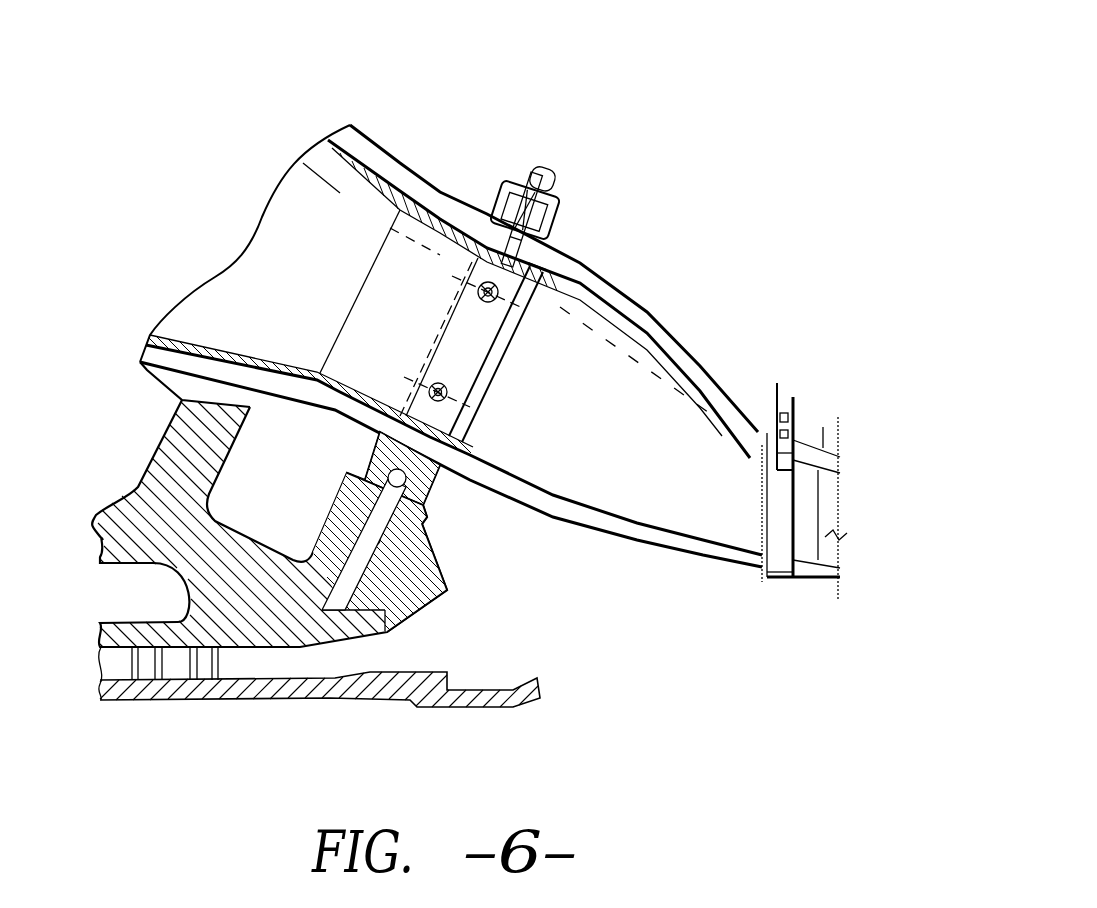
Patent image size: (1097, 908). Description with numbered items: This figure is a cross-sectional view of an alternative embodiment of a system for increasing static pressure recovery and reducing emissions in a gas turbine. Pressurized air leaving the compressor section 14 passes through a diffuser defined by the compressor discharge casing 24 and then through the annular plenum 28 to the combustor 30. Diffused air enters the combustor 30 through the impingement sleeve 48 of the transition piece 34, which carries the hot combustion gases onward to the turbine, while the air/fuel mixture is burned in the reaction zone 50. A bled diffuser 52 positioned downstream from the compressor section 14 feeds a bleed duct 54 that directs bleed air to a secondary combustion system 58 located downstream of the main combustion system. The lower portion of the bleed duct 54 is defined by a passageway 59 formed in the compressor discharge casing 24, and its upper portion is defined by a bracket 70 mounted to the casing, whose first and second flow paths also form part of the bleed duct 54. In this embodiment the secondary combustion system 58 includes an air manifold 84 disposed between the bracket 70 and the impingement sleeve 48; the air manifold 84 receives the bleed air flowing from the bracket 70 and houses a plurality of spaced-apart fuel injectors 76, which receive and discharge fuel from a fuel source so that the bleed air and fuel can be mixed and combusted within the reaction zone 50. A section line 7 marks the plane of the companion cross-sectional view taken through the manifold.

The compressor section 14 is at (92, 667).
The compressor discharge casing 24 is at (224, 599).
The annular plenum 28 is at (504, 614).
The combustor 30 is at (372, 140).
The transition piece 34 is at (619, 452).
The impingement sleeve 48 is at (653, 316).
The reaction zone 50 is at (316, 289).
The bled diffuser 52 is at (420, 653).
The bleed duct 54 is at (353, 550).
The secondary combustion system 58 is at (511, 377).
The passageway 59 is at (380, 541).
The bracket 70 is at (374, 466).
The fuel injectors 76 is at (517, 190).
The air manifold 84 is at (547, 225).
The section line 7- 7 is at (557, 153).